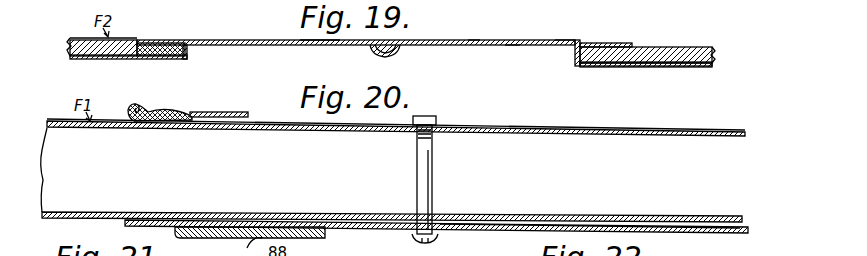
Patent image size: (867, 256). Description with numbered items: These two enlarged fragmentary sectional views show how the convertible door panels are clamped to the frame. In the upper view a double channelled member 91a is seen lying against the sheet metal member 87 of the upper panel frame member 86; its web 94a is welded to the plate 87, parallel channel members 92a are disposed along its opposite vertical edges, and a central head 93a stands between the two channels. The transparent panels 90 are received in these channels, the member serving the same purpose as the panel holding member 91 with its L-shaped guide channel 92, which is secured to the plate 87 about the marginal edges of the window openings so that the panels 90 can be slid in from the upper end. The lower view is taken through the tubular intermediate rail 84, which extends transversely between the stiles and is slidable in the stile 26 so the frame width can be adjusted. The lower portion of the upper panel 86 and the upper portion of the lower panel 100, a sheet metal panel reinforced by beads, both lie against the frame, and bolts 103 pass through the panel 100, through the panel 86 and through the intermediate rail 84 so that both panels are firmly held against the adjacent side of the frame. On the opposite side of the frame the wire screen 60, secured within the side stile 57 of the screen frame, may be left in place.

In FIG. 20, the stile 26 is at (42, 219).
In FIG. 20, the side stile 57 is at (171, 105).
In FIG. 20, the wire screen 60 is at (232, 98).
In FIG. 20, the intermediate rail 84 is at (708, 130).
In FIG. 19, the upper panel frame member 86 is at (184, 33).
In FIG. 20, the upper panel frame member 86 is at (306, 198).
In FIG. 19, the sheet metal member 87 is at (258, 40).
In FIG. 20, the sheet metal member 87 is at (340, 221).
In FIG. 19, the panel 90 is at (663, 46).
In FIG. 19, the panel holding member 91 is at (456, 6).
In FIG. 19, the L-shaped guide channel 92 is at (499, 6).
In FIG. 19, the channel members 92a is at (170, 72).
In FIG. 19, the central head 93a is at (397, 54).
In FIG. 19, the web 94a is at (320, 45).
In FIG. 19, the double channelled member 91a is at (563, 53).
In FIG. 20, the lower panel 100 is at (502, 200).
In FIG. 20, the bolts 103 is at (436, 167).